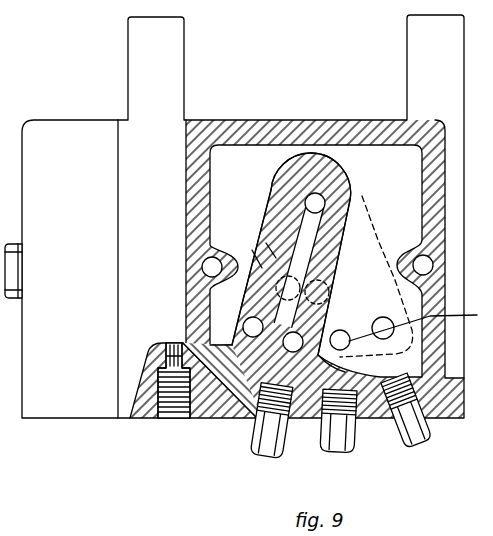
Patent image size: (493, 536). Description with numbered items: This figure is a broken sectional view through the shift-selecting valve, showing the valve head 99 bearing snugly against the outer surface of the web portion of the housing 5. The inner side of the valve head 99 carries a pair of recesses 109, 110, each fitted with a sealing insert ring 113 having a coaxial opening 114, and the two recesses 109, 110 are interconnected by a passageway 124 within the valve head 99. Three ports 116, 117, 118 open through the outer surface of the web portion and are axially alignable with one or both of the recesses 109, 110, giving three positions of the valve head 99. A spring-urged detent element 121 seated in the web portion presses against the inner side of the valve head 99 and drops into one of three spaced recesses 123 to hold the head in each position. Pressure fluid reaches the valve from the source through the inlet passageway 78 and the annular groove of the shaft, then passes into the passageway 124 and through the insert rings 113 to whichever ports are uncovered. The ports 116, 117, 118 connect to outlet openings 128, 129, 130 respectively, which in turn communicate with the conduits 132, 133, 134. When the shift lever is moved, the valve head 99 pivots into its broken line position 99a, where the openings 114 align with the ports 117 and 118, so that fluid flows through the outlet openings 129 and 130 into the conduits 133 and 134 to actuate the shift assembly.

The housing 5 is at (249, 216).
The inlet passageway 78 is at (172, 419).
The valve head 99 is at (357, 178).
The broken line position 99a is at (386, 244).
The recess 109 is at (246, 344).
The recess 110 is at (308, 350).
The sealing insert ring 113 is at (250, 318).
The coaxial opening 114 is at (285, 338).
The port 116 is at (350, 328).
The port 117 is at (383, 318).
The port 118 is at (421, 322).
The detent element 121 is at (330, 286).
The spaced recesses 123 is at (274, 252).
The passageway 124 is at (245, 416).
The outlet opening 128 is at (294, 402).
The outlet opening 129 is at (356, 410).
The outlet opening 130 is at (420, 412).
The conduit 132 is at (264, 456).
The conduit 133 is at (341, 441).
The conduit 134 is at (410, 433).